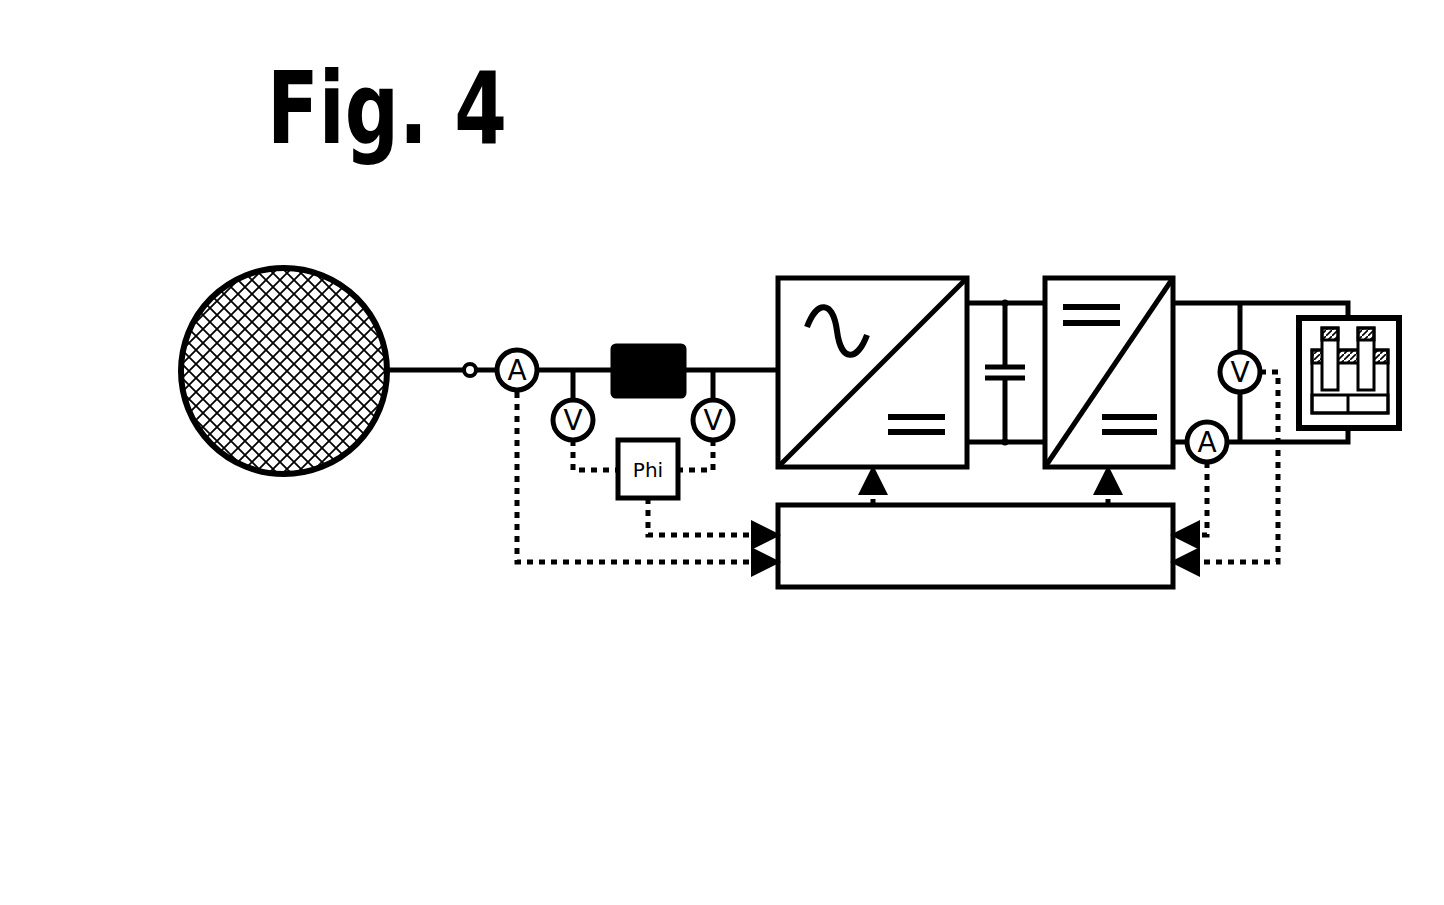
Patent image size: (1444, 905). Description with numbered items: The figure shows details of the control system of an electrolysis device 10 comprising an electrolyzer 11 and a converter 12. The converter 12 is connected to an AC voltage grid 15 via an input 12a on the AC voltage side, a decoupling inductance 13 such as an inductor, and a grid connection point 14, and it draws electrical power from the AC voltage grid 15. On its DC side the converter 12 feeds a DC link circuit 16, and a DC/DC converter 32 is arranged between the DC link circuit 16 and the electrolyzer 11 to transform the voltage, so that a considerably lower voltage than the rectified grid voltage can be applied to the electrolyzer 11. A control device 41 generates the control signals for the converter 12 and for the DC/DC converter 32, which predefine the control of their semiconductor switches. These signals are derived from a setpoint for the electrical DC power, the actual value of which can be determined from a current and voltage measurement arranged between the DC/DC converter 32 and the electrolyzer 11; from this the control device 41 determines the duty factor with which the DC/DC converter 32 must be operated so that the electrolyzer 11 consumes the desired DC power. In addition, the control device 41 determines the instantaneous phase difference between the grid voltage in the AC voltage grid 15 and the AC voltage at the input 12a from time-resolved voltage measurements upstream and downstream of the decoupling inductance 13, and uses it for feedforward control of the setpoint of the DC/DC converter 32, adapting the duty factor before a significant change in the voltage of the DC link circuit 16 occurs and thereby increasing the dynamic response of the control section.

The electrolysis device 10 is at (813, 166).
The electrolyzer 11 is at (1370, 428).
The converter 12 is at (815, 278).
The input on the AC voltage side 12a is at (772, 366).
The decoupling inductance 13 is at (633, 345).
The grid connection point 14 is at (465, 364).
The AC voltage grid 15 is at (224, 287).
The DC link circuit 16 is at (995, 362).
The DC/DC converter 32 is at (1127, 278).
The control device 41 is at (975, 588).